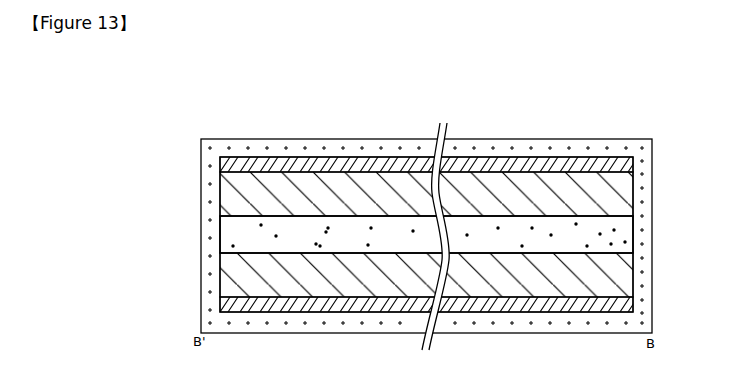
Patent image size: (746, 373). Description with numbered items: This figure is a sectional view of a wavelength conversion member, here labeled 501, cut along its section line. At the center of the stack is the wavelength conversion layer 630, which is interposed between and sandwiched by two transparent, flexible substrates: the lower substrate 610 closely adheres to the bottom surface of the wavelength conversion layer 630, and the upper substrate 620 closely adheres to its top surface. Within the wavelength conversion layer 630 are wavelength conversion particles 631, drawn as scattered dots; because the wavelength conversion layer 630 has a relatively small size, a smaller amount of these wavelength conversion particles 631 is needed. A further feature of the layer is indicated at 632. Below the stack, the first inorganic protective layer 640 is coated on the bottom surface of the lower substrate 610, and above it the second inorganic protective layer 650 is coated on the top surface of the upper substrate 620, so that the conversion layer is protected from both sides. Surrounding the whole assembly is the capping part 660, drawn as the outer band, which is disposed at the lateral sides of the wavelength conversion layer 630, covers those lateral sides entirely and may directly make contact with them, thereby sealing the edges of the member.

The display device 501 is at (233, 108).
The capping part 660 is at (598, 141).
The second inorganic protective layer 650 is at (636, 168).
The upper substrate 620 is at (627, 196).
The wavelength conversion layer 630 is at (476, 234).
The particles 632 is at (626, 228).
The wavelength conversion particles 631 is at (626, 242).
The lower substrate 610 is at (626, 274).
The first inorganic protective layer 640 is at (626, 303).